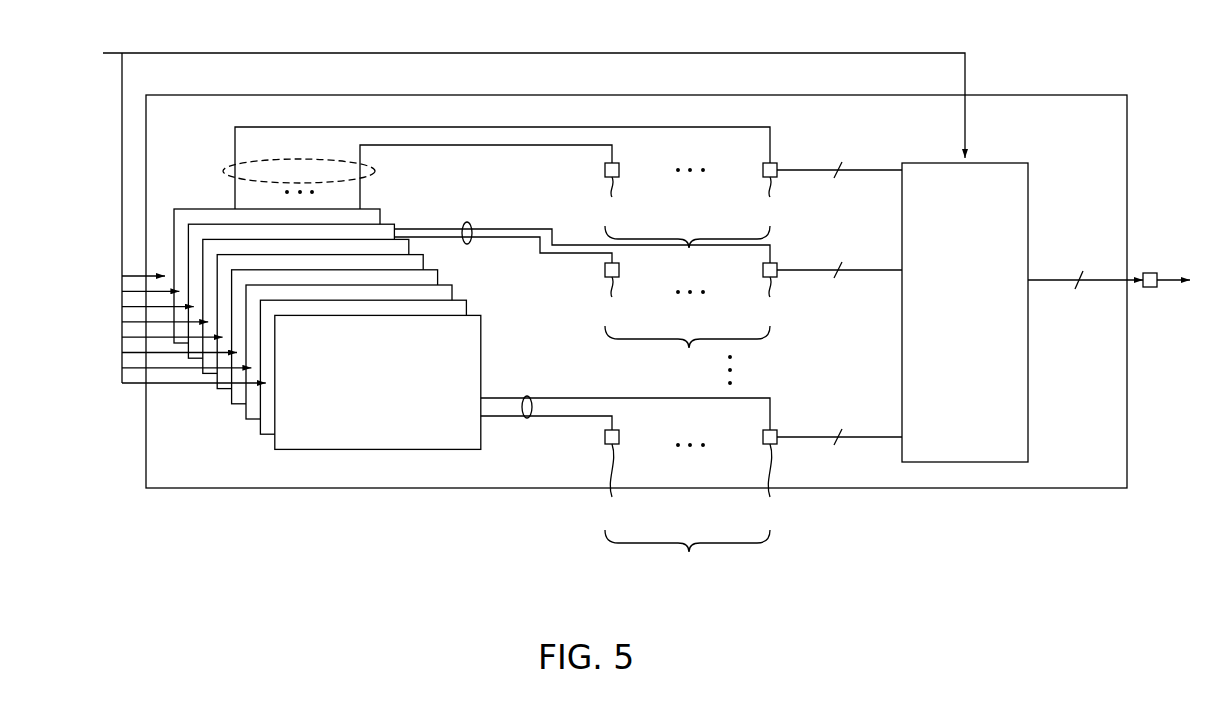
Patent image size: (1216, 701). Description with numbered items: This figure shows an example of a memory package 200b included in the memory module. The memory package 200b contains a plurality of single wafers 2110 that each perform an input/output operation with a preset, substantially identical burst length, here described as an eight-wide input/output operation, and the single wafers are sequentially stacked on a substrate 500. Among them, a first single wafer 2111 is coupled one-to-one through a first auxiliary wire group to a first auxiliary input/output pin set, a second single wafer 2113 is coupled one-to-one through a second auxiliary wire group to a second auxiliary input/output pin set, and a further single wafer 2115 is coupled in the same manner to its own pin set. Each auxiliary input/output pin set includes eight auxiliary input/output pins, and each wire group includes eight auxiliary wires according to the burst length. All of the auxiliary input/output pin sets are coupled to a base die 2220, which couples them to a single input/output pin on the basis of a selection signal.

The memory package 200b is at (608, 38).
The substrate 500 is at (1090, 95).
The plurality of single wafers 2110 is at (285, 403).
The first single wafer 2111 is at (183, 343).
The second single wafer 2113 is at (201, 358).
The single wafer 2115 is at (369, 436).
The base die 2220 is at (1003, 163).